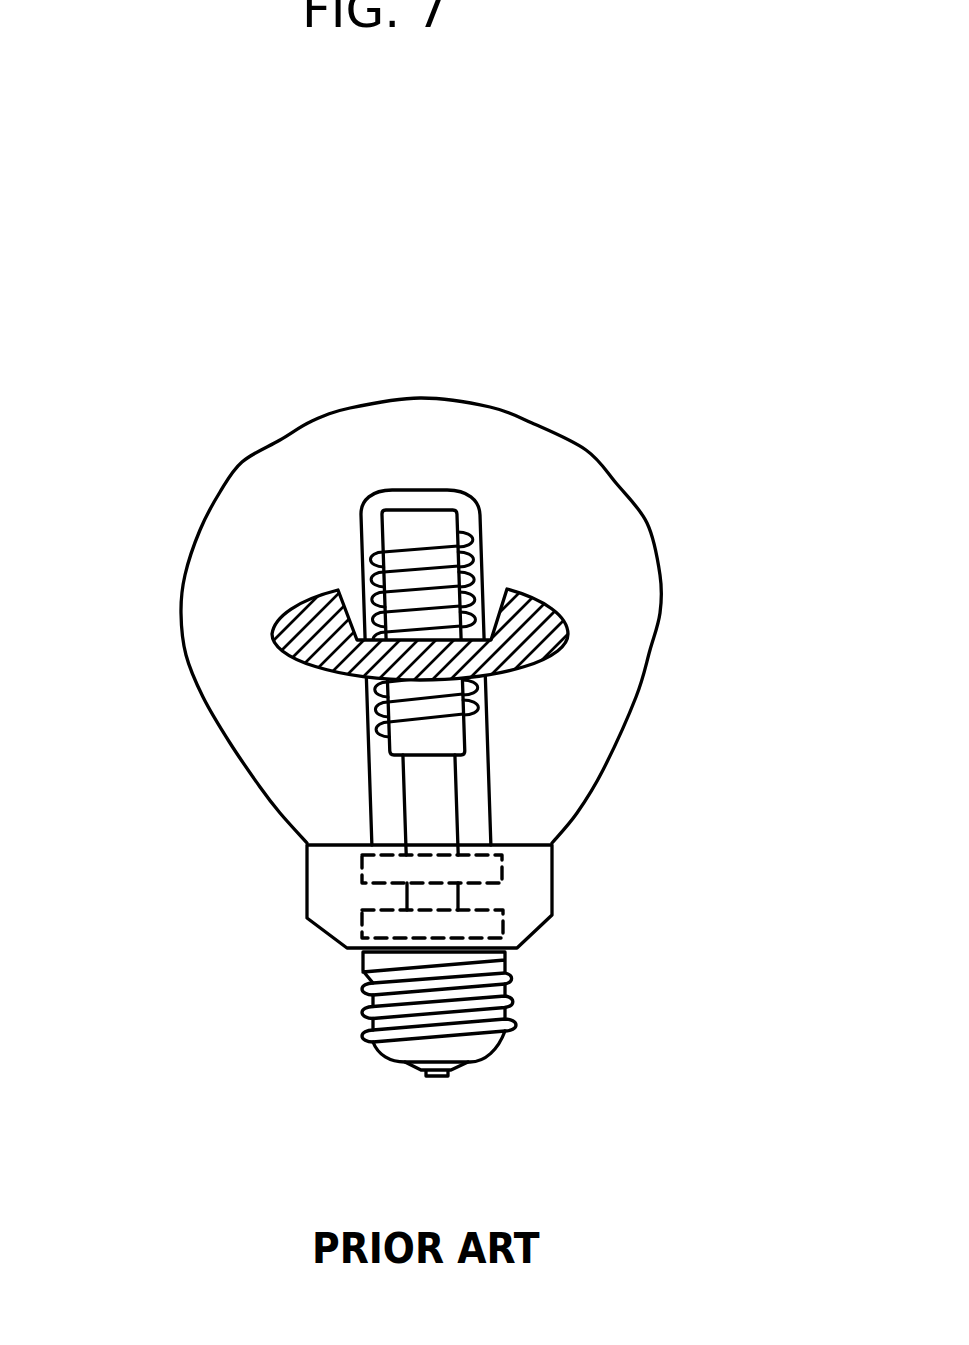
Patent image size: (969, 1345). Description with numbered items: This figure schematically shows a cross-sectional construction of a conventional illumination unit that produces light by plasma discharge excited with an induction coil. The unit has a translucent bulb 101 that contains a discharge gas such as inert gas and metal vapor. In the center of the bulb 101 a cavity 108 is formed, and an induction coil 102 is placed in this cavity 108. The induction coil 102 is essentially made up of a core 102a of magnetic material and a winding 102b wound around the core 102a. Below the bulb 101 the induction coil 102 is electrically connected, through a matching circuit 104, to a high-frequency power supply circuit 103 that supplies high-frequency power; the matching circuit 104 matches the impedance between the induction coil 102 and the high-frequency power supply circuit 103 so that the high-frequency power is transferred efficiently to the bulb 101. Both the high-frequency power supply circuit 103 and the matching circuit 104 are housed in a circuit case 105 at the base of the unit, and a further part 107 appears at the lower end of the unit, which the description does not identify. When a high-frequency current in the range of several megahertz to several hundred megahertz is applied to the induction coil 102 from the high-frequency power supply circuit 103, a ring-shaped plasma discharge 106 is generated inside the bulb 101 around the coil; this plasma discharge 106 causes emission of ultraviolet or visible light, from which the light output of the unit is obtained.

The translucent bulb 101 is at (313, 419).
The induction coil 102 is at (417, 510).
The core 102a is at (450, 740).
The winding 102b is at (484, 560).
The high-frequency power supply circuit 103 is at (362, 932).
The matching circuit 104 is at (362, 857).
The circuit case 105 is at (552, 870).
The ring-shaped plasma discharge 106 is at (560, 628).
The screw base 107 is at (505, 1003).
The cavity 108 is at (360, 534).